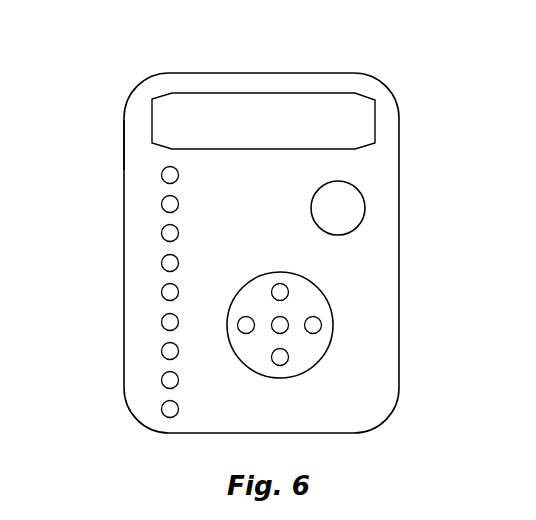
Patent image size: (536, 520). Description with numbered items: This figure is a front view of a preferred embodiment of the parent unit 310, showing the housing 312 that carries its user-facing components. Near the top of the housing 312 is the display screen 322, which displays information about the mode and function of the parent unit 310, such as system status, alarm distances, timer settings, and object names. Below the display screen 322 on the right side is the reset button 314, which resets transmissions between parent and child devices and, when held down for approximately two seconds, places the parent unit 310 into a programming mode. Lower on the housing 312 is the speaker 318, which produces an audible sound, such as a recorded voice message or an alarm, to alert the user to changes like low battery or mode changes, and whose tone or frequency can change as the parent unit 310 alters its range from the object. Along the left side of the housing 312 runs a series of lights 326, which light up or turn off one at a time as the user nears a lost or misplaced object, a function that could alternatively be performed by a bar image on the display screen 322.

The parent unit 310 is at (98, 393).
The housing 312 is at (124, 145).
The reset button 314 is at (348, 204).
The speaker 318 is at (318, 303).
The display screen 322 is at (330, 100).
The series of lights 326 is at (137, 284).